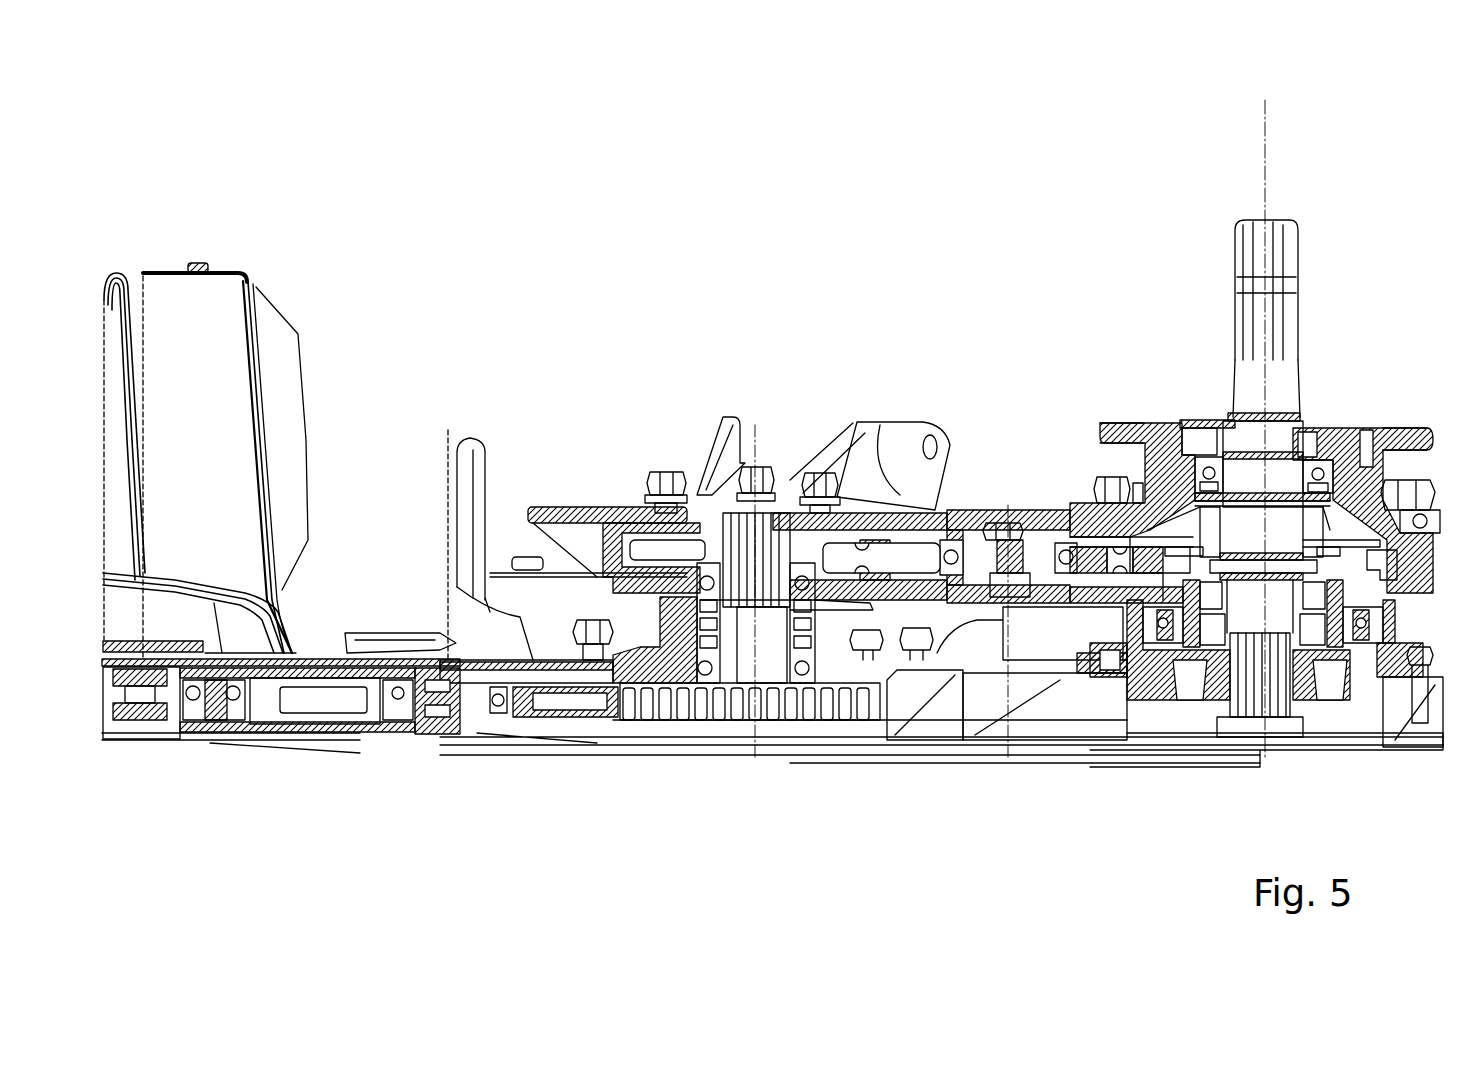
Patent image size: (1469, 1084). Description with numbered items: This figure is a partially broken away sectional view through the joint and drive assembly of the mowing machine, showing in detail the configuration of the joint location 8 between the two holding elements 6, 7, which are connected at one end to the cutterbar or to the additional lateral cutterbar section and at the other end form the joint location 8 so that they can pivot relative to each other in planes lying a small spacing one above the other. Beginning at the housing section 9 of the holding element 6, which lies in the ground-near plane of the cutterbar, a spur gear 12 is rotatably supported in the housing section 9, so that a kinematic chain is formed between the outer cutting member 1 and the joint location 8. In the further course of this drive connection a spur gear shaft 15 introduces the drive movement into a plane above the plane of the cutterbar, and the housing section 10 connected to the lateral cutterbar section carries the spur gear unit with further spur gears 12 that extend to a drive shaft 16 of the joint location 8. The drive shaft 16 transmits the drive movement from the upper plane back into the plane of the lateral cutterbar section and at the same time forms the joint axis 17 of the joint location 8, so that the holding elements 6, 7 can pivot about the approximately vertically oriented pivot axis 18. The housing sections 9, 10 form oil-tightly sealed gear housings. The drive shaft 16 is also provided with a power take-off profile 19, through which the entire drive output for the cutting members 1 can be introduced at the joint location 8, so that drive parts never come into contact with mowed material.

The cutting member 1 is at (270, 262).
The holding element 6 is at (372, 754).
The holding element 7 is at (1360, 415).
The joint location 8 is at (1197, 362).
The housing section 9 is at (945, 723).
The housing section 10 is at (1095, 708).
The spur gear 12 is at (640, 550).
The spur gear shaft 15 is at (737, 663).
The drive shaft 16 is at (1275, 440).
The joint axis 17 is at (1212, 415).
The pivot axis 18 is at (1265, 110).
The power take-off profile 19 is at (1307, 260).